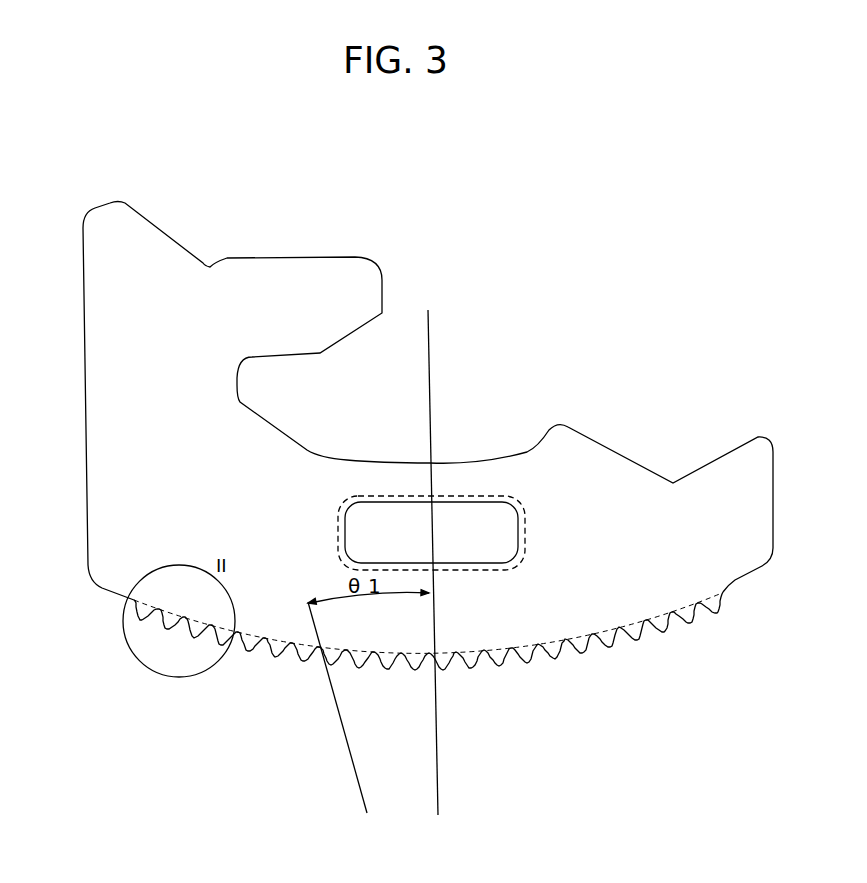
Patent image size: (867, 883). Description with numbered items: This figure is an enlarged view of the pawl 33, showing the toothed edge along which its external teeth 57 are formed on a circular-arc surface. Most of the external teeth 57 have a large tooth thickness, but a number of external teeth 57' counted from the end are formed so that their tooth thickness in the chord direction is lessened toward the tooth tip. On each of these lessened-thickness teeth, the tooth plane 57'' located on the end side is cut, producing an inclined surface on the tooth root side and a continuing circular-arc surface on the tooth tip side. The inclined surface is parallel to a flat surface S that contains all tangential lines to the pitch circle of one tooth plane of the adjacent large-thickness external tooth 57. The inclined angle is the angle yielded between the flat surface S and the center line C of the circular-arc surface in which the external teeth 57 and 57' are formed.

The pawl 33 is at (462, 416).
The external teeth 57 is at (428, 662).
The external teeth having a lessened tooth thickness 57' is at (205, 685).
The tooth plane 57'' is at (93, 604).
The center line C is at (438, 562).
The flat surface S is at (357, 784).